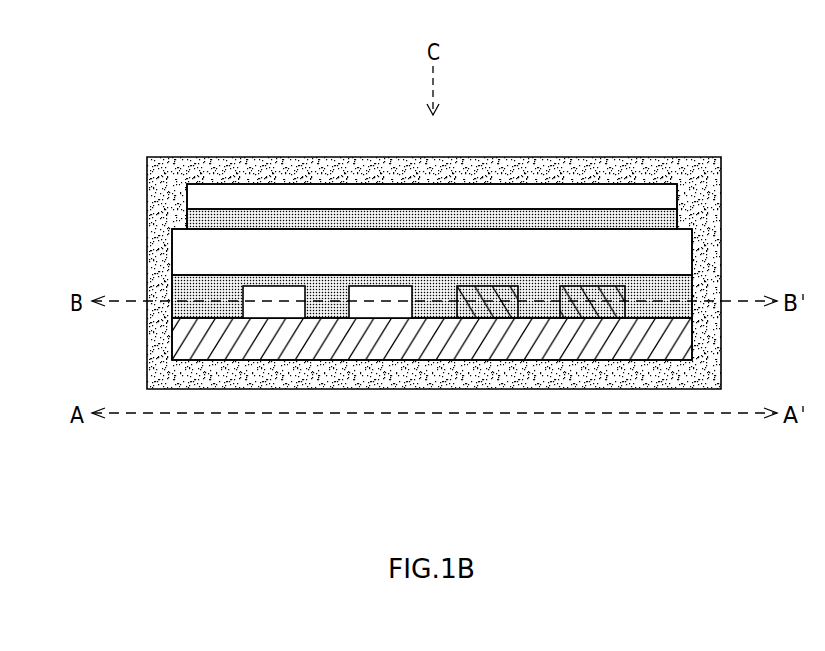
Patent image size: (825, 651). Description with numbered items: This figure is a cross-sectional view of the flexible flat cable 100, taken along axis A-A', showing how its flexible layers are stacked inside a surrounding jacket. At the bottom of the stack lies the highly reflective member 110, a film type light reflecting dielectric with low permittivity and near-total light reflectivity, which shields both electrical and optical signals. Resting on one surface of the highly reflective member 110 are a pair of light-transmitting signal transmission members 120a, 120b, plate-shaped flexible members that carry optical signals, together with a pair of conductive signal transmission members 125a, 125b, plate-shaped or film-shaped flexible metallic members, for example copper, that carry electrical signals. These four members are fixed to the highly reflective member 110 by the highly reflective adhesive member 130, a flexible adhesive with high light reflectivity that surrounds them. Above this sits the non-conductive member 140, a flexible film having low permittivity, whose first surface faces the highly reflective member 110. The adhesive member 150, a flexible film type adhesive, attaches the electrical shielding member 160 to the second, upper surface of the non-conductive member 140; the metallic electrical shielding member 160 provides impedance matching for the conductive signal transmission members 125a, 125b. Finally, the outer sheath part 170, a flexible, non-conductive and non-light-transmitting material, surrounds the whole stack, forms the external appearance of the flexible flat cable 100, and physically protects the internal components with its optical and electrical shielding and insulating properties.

The flexible flat cable 100 is at (609, 90).
The highly reflective member 110 is at (680, 344).
The light-transmitting signal transmission member 120a is at (273, 307).
The light-transmitting signal transmission member 120b is at (380, 307).
The conductive signal transmission member 125a is at (487, 307).
The conductive signal transmission member 125b is at (593, 307).
The highly reflective adhesive member 130 is at (680, 279).
The non-conductive member 140 is at (680, 250).
The adhesive member 150 is at (670, 221).
The electrical shielding member 160 is at (670, 194).
The outer sheath part 170 is at (169, 157).